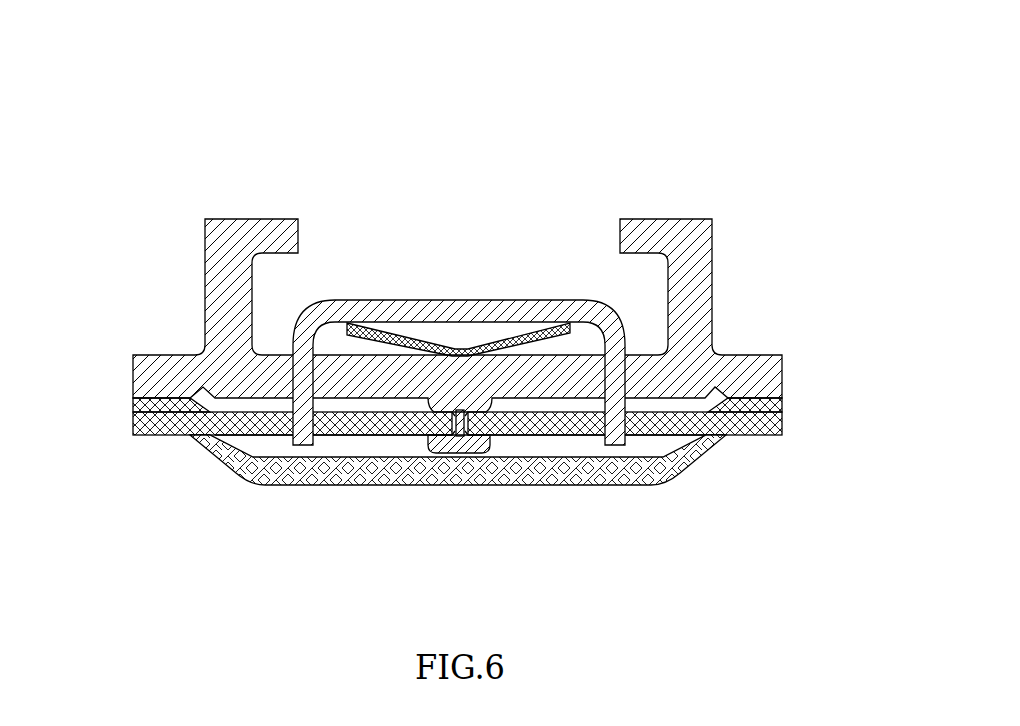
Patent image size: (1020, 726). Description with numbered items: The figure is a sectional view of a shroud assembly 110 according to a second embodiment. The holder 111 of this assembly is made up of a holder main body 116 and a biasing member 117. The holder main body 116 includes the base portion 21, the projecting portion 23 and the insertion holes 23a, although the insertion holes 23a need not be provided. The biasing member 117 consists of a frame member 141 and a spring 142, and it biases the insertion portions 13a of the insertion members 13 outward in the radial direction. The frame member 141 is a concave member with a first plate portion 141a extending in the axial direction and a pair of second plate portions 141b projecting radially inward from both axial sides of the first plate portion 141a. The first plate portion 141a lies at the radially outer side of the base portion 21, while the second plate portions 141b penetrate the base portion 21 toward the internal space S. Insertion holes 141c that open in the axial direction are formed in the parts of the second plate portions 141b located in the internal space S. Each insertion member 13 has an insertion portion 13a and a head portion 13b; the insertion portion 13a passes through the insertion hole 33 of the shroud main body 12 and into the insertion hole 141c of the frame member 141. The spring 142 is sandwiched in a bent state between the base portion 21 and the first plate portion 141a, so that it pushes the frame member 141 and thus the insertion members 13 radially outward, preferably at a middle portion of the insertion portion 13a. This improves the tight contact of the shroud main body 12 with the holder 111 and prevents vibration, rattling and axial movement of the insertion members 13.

The shroud assembly 110 is at (778, 246).
The holder 111 is at (250, 142).
The holder main body 116 is at (276, 218).
The biasing member 117 is at (443, 198).
The shroud main body 12 is at (644, 490).
The insertion member 13 is at (130, 424).
The insertion portion 13a is at (380, 437).
The head portion 13b is at (148, 437).
The base portion 21 is at (481, 274).
The projecting portion 23 is at (489, 452).
The insertion hole 23a is at (458, 436).
The insertion hole 33 is at (192, 437).
The frame member 141 is at (453, 299).
The first plate portion 141a is at (368, 299).
The second plate portion 141b is at (290, 390).
The insertion hole 141c is at (316, 438).
The spring 142 is at (503, 332).
The internal space S is at (580, 447).